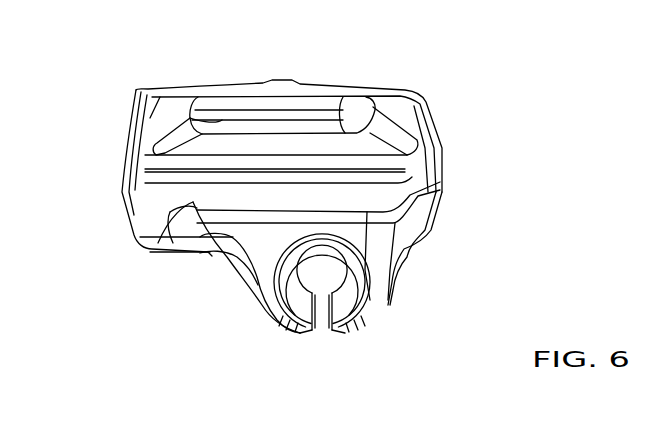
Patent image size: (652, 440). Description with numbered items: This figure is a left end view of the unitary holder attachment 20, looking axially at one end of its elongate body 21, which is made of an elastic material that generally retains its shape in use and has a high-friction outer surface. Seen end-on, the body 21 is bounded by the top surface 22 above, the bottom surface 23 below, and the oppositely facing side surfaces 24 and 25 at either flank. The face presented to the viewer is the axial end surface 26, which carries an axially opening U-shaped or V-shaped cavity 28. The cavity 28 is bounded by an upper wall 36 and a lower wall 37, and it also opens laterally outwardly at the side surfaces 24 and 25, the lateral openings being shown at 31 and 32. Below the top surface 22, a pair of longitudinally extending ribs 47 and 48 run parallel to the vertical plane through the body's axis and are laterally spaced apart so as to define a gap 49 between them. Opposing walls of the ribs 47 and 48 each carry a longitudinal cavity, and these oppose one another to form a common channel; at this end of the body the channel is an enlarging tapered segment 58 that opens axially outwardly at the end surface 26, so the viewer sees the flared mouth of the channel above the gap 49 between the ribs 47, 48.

The unitary holder attachment 20 is at (450, 90).
The elongate body 21 is at (424, 84).
The top surface 22 is at (330, 84).
The bottom surface 23 is at (262, 268).
The side surface 24 is at (443, 165).
The side surface 25 is at (125, 183).
The axial end surface 26 is at (405, 205).
The cavity 28 is at (257, 180).
The lateral opening 31 is at (153, 172).
The lateral opening 32 is at (400, 171).
The upper wall 36 is at (250, 128).
The lower wall 37 is at (195, 205).
The rib 47 is at (357, 317).
The rib 48 is at (292, 320).
The gap 49 is at (321, 328).
The enlarging tapered segment 58 is at (347, 283).